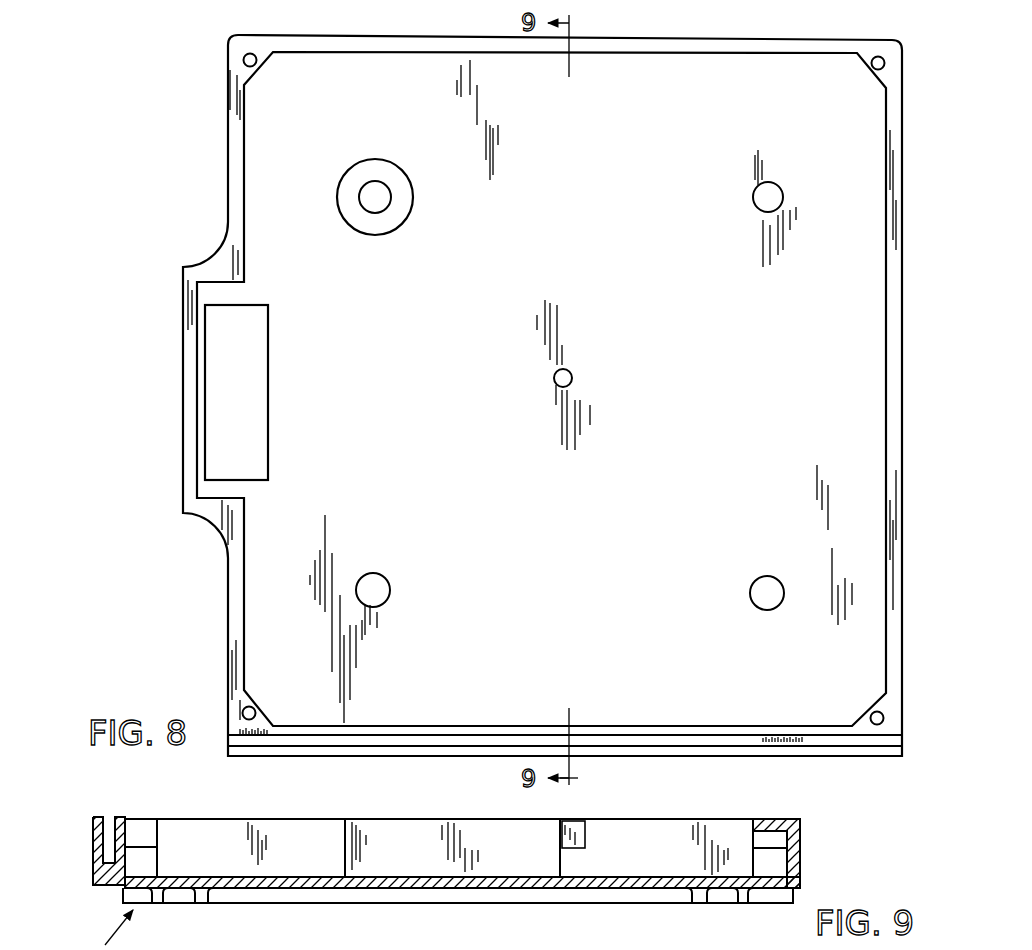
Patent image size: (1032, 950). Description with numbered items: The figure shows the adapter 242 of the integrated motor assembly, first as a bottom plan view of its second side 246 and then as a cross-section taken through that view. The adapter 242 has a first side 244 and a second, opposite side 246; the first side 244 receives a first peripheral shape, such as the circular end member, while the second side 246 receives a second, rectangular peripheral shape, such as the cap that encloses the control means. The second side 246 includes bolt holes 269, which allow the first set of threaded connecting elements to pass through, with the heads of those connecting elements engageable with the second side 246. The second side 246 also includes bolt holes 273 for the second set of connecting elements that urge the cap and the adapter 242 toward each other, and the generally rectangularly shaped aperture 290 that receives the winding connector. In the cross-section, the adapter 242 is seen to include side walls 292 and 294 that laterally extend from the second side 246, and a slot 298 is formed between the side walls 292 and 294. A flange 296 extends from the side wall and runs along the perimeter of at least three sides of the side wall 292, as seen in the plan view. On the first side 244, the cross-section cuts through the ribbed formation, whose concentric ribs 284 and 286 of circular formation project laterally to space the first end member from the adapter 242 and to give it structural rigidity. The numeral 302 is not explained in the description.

In FIG. 8, the adapter 242 is at (183, 181).
In FIG. 9, the adapter 242 is at (462, 848).
In FIG. 9, the first side 244 is at (267, 890).
In FIG. 8, the second side 246 is at (268, 141).
In FIG. 9, the second side 246 is at (397, 876).
In FIG. 8, the bolt holes 269 is at (376, 192).
In FIG. 8, the bolt holes 273 is at (243, 60).
In FIG. 9, the concentric rib 284 is at (196, 903).
In FIG. 9, the concentric rib 286 is at (742, 906).
In FIG. 8, the aperture 290 is at (225, 365).
In FIG. 8, the side wall 292 is at (657, 728).
In FIG. 9, the side wall 292 is at (122, 858).
In FIG. 8, the side wall 294 is at (873, 757).
In FIG. 9, the side wall 294 is at (95, 832).
In FIG. 8, the flange 296 is at (925, 528).
In FIG. 9, the flange 296 is at (791, 822).
In FIG. 8, the slot 298 is at (745, 742).
In FIG. 9, the slot 298 is at (108, 828).
In FIG. 9, the foot 302 is at (552, 949).